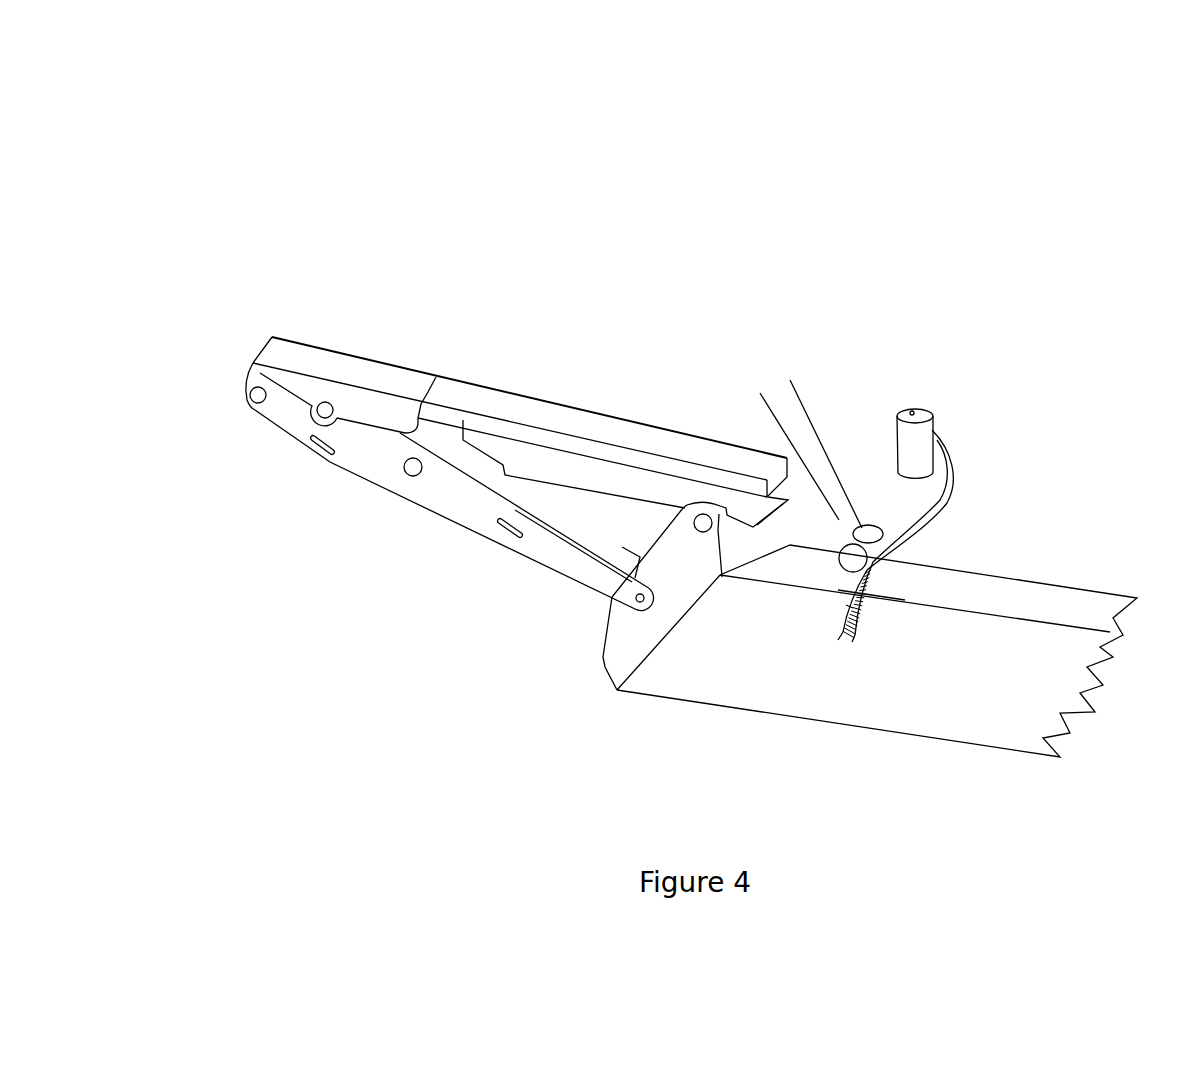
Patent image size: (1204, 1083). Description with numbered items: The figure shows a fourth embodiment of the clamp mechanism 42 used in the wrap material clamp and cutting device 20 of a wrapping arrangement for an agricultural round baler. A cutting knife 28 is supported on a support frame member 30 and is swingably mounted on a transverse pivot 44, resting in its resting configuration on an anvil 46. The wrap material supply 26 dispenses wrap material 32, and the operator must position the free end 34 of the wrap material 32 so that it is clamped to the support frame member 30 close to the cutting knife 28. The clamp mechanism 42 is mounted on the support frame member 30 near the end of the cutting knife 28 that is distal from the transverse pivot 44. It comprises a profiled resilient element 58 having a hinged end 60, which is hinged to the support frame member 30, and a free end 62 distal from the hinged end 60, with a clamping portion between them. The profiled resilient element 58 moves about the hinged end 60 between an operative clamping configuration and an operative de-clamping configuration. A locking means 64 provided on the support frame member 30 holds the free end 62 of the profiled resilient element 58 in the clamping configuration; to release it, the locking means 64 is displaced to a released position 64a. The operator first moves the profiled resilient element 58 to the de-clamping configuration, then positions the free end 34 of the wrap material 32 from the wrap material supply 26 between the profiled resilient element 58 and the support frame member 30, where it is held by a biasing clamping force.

The wrap material clamp and cutting device 20 is at (600, 207).
The clamp mechanism 42 is at (412, 310).
The cutting knife 28 is at (584, 422).
The transverse pivot 44 is at (257, 407).
The anvil 46 is at (540, 468).
The wrap material supply 26 is at (897, 427).
The wrap material 32 is at (953, 472).
The support frame member 30 is at (850, 697).
The hinged end 60 is at (897, 581).
The profiled resilient element 58 is at (891, 585).
The free end 62 is at (839, 570).
The locking means 64 is at (833, 592).
The released position 64a is at (847, 613).
The free end 34 is at (848, 597).